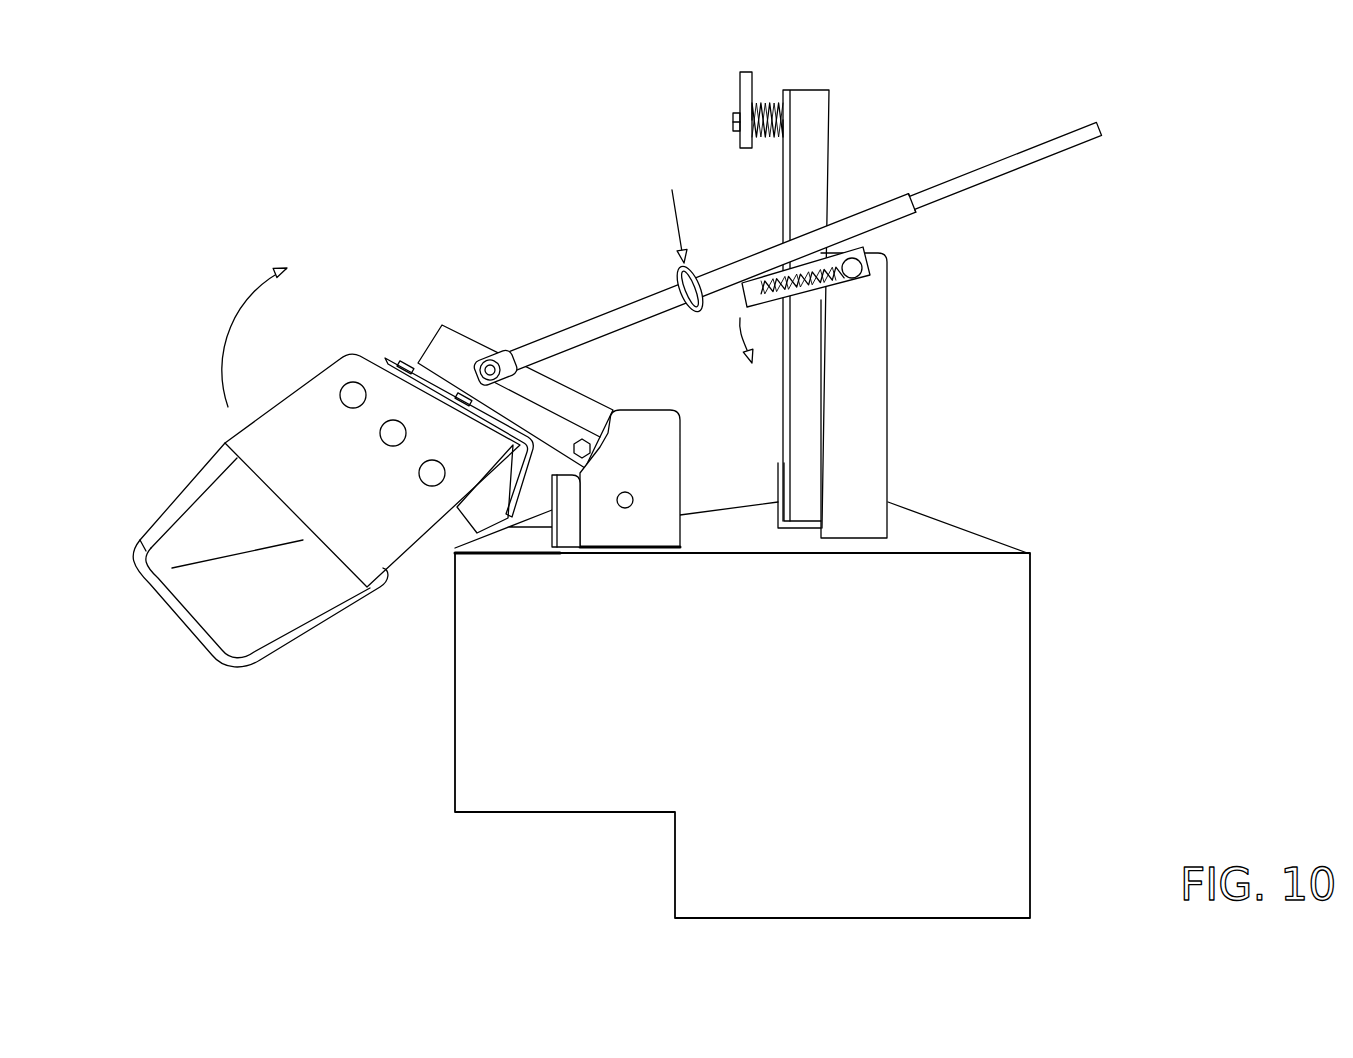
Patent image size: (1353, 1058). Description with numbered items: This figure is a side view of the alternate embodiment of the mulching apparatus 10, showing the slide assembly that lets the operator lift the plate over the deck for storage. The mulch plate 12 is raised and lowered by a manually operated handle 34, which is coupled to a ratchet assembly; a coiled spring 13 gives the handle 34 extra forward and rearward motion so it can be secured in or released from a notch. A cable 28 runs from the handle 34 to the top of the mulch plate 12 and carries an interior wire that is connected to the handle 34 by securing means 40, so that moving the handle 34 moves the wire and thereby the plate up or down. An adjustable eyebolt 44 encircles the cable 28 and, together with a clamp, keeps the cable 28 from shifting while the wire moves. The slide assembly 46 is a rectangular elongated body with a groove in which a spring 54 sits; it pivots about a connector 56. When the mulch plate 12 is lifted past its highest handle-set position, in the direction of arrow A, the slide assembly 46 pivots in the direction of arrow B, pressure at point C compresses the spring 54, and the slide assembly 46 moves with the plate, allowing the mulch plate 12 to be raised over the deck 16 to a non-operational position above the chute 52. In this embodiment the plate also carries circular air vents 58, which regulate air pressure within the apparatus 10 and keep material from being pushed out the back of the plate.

The mulching apparatus 10 is at (280, 791).
The mulch plate 12 is at (332, 484).
The coiled spring 13 is at (761, 100).
The deck 16 is at (937, 540).
The cable 28 is at (998, 166).
The manually operated handle 34 is at (740, 82).
The securing means 40 is at (878, 396).
The adjustable eyebolt 44 is at (691, 316).
The slide assembly 46 is at (868, 282).
The chute 52 is at (455, 693).
The spring 54 is at (768, 282).
The connector 56 is at (866, 263).
The air vents 58 is at (393, 419).